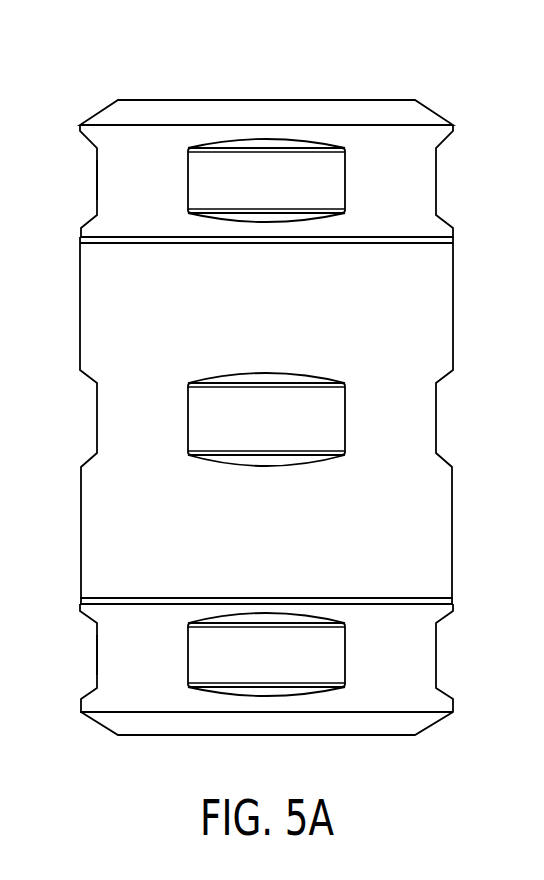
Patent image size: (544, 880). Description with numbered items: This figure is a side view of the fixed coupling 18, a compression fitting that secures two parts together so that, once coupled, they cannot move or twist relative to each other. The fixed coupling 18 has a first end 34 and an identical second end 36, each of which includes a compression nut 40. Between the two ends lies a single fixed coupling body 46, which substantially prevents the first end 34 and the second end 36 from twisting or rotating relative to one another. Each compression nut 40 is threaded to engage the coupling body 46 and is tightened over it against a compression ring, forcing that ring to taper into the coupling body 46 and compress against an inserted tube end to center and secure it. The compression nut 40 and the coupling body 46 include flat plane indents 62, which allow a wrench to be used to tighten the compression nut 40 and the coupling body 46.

The fixed coupling 18 is at (168, 70).
The first end 34 is at (401, 95).
The second end 36 is at (387, 739).
The compression nut 40 is at (117, 161).
The fixed coupling body 46 is at (135, 375).
The flat plane indents 62 is at (309, 165).